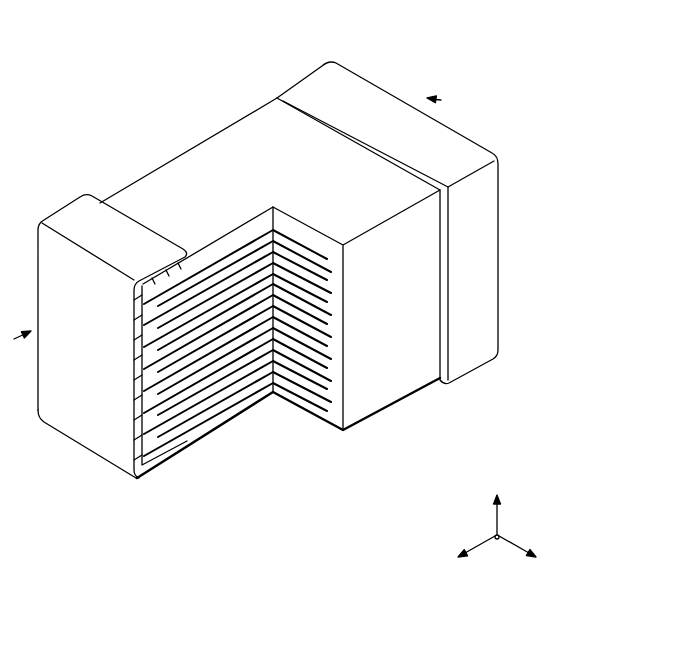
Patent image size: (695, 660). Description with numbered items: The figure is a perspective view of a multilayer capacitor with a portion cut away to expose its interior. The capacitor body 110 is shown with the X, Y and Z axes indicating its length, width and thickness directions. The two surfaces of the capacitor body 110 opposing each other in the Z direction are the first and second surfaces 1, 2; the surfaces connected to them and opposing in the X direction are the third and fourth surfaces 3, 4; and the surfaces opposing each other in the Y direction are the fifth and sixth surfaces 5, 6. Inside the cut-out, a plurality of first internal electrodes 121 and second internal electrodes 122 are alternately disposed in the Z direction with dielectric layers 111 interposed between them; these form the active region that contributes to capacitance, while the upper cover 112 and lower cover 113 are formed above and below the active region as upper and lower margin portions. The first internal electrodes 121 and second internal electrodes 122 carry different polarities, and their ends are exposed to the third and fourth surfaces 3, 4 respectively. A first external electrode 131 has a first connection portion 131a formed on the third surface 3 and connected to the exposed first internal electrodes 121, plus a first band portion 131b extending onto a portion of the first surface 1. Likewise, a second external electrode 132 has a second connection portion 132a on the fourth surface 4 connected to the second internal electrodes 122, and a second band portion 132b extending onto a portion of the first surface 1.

The first surface 1 is at (315, 318).
The second surface 2 is at (222, 154).
The third surface 3 is at (77, 408).
The fourth surface 4 is at (368, 90).
The fifth surface 5 is at (404, 366).
The sixth surface 6 is at (266, 116).
The capacitor body 110 is at (261, 304).
The dielectric layer 111 is at (237, 370).
The upper cover 112 is at (195, 265).
The lower cover 113 is at (330, 412).
The first internal electrode 121 is at (160, 382).
The second internal electrode 122 is at (268, 325).
The first external electrode 131 is at (112, 381).
The first connection portion 131a is at (100, 432).
The first band portion 131b is at (158, 461).
The second external electrode 132 is at (449, 244).
The second connection portion 132a is at (502, 296).
The second band portion 132b is at (480, 370).